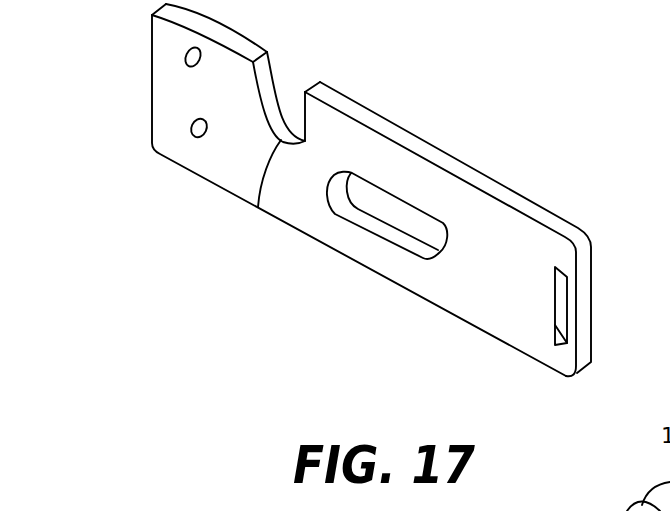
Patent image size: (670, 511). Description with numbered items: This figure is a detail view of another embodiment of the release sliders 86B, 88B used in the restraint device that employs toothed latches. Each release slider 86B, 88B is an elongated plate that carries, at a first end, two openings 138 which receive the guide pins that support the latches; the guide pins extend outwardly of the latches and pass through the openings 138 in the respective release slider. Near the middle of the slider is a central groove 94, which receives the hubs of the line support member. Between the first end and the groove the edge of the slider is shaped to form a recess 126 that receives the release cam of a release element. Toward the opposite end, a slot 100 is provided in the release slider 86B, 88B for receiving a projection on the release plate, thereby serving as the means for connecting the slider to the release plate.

The release slider 86B is at (371, 190).
The release slider 88B is at (513, 131).
The openings 138 is at (192, 124).
The recess 126 is at (258, 207).
The central groove 94 is at (352, 212).
The slot 100 is at (557, 327).